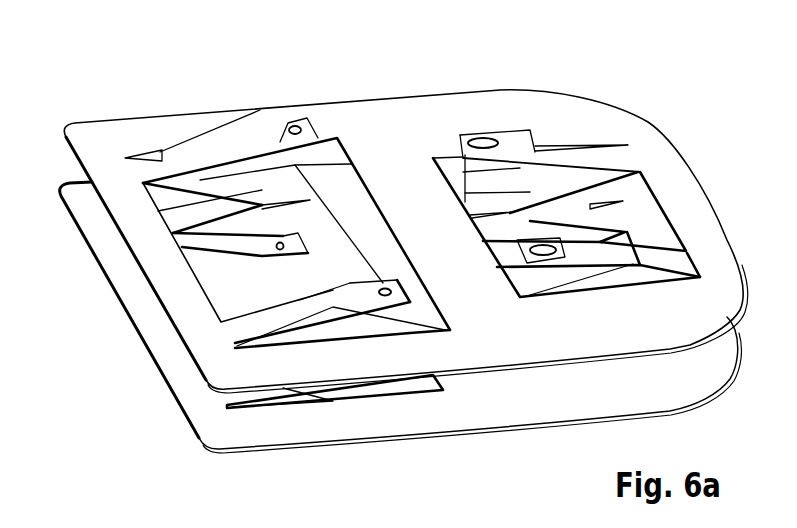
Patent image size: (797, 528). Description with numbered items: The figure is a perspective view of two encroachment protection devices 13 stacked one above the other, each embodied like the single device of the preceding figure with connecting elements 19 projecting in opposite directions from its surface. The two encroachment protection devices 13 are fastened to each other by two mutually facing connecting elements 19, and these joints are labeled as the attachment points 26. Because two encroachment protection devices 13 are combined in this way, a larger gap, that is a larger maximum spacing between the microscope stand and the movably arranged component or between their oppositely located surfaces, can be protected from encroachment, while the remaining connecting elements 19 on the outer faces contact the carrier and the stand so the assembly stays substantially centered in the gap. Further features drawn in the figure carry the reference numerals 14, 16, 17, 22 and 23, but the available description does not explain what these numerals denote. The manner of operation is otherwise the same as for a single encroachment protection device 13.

The encroachment protection device 13 is at (118, 104).
The plate 14 is at (363, 112).
The inner frame 16 is at (365, 213).
The movable plate 17 is at (628, 187).
The connecting element 19 is at (227, 247).
The mounting hole tab 22 is at (297, 128).
The slot 23 is at (478, 140).
The attachment point 26 is at (290, 180).